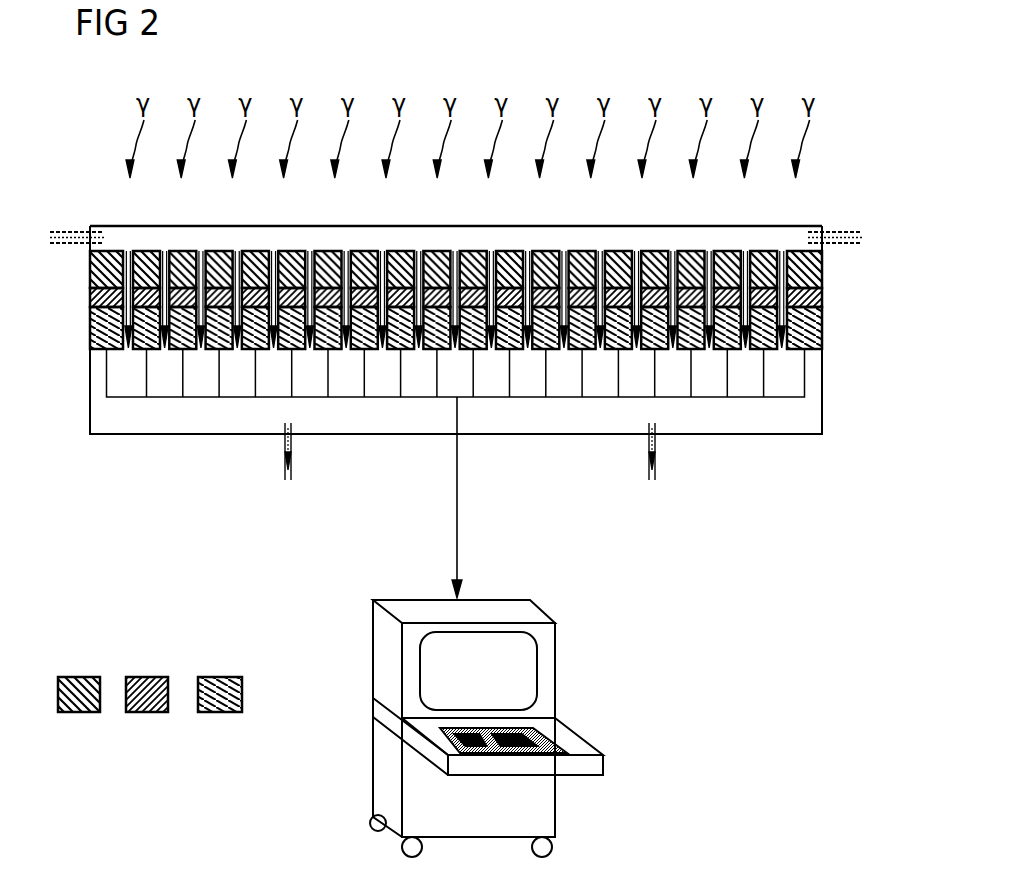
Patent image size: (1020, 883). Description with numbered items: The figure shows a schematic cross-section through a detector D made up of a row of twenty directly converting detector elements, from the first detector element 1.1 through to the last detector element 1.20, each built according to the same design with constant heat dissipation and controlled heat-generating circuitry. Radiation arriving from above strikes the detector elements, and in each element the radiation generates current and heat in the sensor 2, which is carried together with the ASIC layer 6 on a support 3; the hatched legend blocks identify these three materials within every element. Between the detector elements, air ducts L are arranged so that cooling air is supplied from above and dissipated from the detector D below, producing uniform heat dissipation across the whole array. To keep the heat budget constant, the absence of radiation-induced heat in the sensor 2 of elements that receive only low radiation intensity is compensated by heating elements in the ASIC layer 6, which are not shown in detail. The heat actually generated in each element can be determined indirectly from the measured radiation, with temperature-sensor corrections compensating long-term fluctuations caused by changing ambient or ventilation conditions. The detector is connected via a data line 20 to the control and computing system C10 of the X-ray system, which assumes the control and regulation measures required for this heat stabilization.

The detector element 1.1 is at (121, 250).
The detector element 1.20 is at (797, 250).
The air ducts L is at (66, 246).
The data line to evaluation unit 20 is at (452, 513).
The detector D is at (756, 488).
The control and computing system C10 is at (557, 667).
The sensor 2 is at (79, 677).
The ASIC 6 is at (148, 677).
The support 3 is at (220, 677).